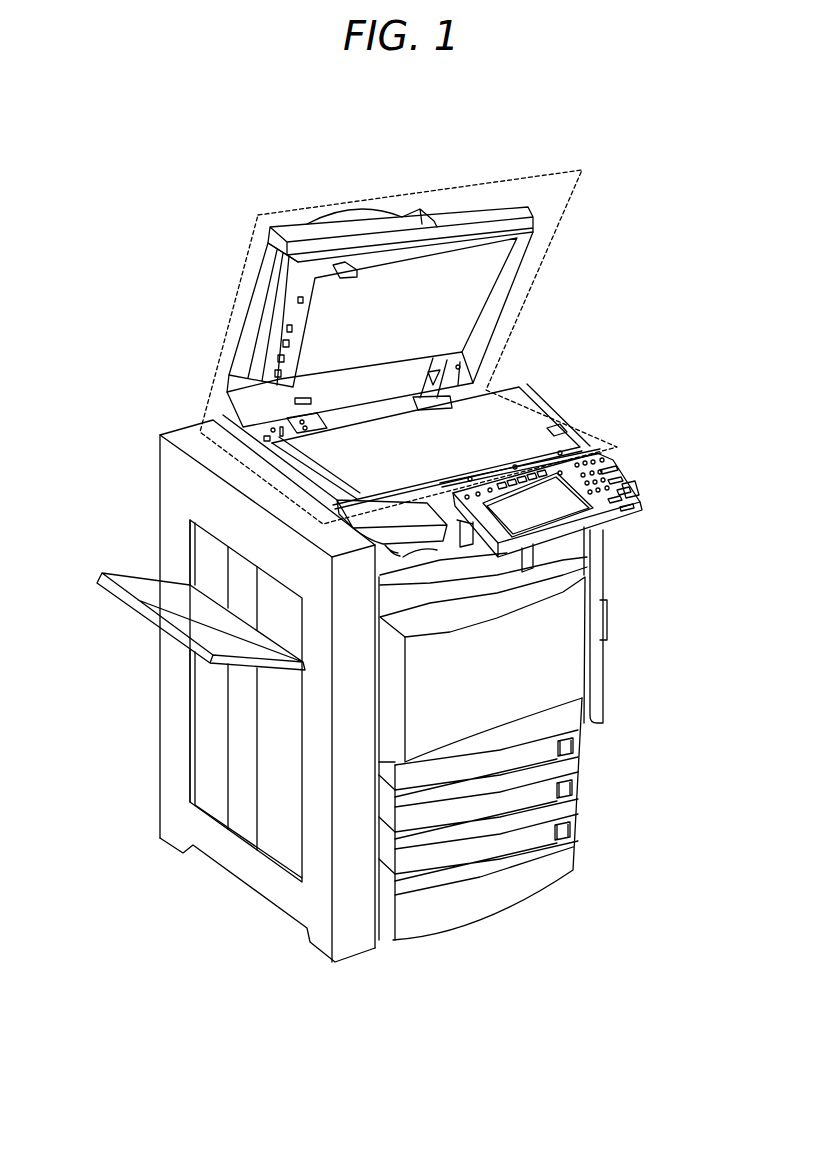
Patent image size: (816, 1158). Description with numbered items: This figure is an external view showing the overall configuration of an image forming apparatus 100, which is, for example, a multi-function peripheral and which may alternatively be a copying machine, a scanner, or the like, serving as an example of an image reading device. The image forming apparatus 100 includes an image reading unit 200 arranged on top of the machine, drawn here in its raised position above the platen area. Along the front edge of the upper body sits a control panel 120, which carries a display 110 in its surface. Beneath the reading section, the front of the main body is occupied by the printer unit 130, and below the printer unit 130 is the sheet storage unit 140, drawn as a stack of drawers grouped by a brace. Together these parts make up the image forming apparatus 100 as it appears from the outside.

The image forming apparatus 100 is at (396, 172).
The image reading unit 200 is at (543, 178).
The display 110 is at (563, 493).
The control panel 120 is at (628, 482).
The printer unit 130 is at (565, 686).
The sheet storage unit 140 is at (593, 730).